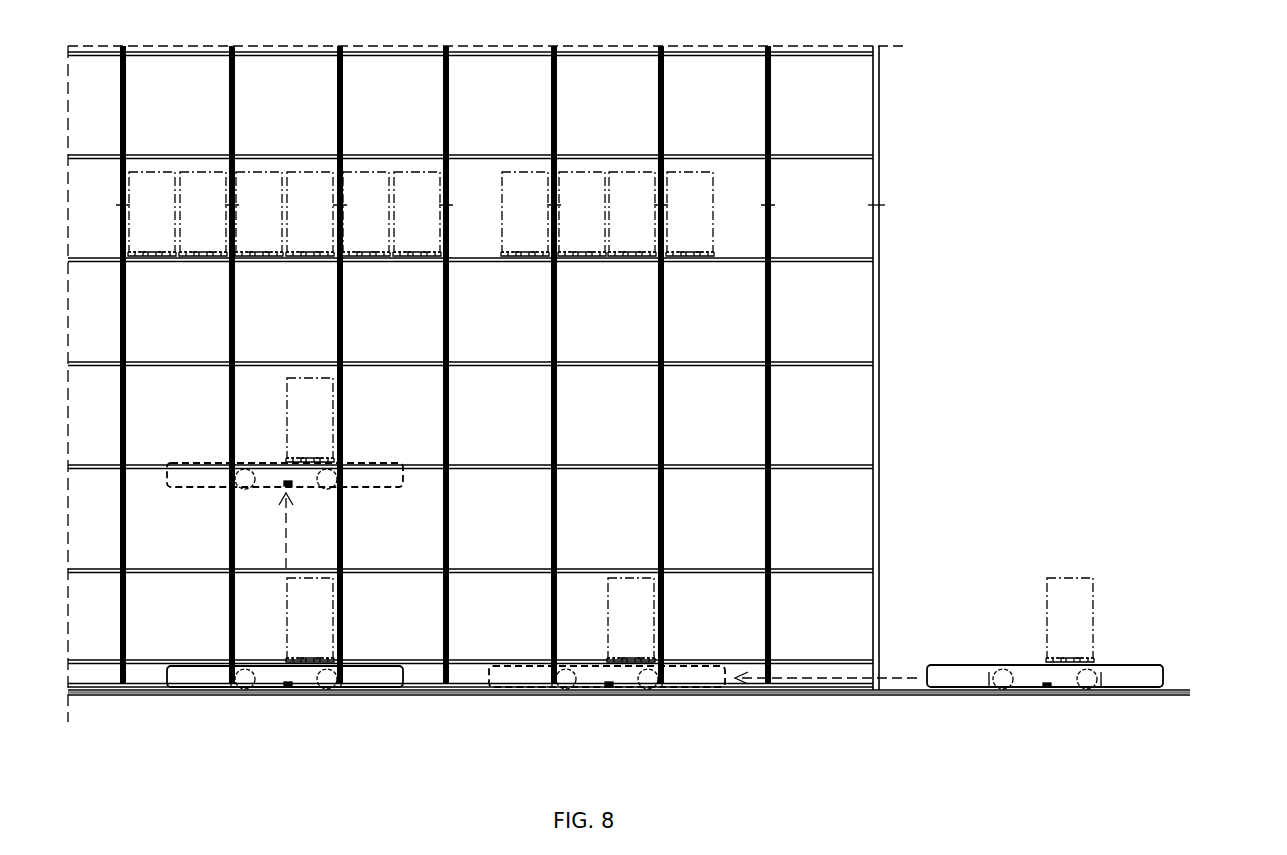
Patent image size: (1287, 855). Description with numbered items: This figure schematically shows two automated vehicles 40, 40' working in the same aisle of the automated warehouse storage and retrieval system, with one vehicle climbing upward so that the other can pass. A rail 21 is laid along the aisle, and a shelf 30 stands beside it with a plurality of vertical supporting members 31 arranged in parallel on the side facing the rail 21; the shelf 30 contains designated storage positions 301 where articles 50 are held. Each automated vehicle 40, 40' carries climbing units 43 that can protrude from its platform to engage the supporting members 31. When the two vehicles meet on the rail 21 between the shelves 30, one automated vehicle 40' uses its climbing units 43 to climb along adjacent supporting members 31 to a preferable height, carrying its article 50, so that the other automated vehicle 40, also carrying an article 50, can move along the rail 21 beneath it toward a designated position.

The shelf 30 is at (880, 273).
The designated storage position 301 is at (168, 372).
The supporting member 31 is at (229, 530).
The automated vehicle 40 is at (873, 645).
The automated vehicle 40' is at (278, 533).
The climbing unit 43 is at (231, 680).
The article 50 is at (1064, 562).
The rail 21 is at (1038, 696).